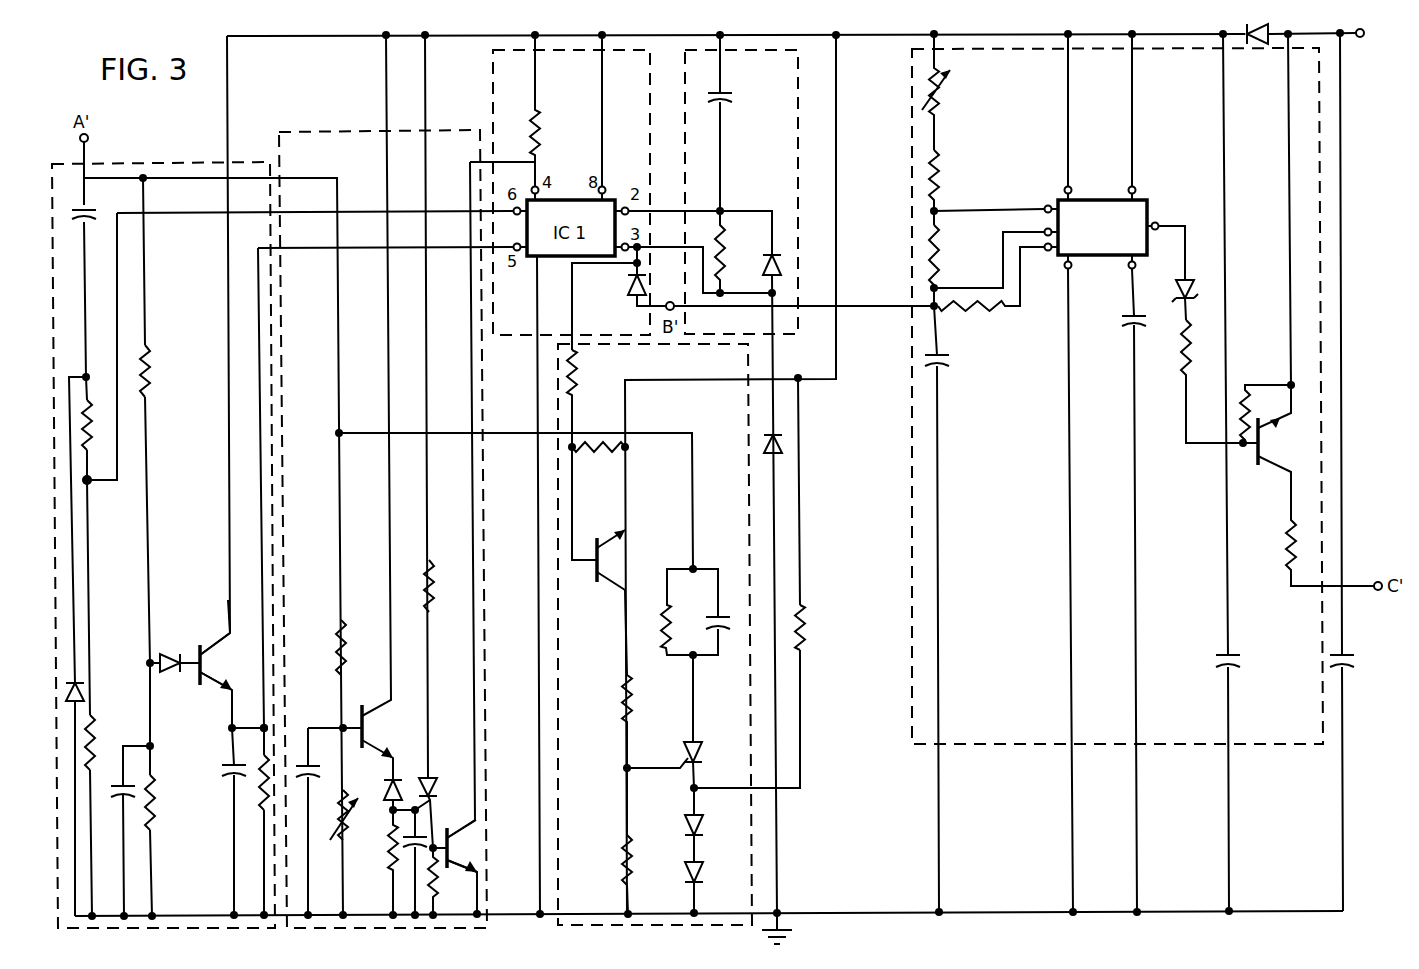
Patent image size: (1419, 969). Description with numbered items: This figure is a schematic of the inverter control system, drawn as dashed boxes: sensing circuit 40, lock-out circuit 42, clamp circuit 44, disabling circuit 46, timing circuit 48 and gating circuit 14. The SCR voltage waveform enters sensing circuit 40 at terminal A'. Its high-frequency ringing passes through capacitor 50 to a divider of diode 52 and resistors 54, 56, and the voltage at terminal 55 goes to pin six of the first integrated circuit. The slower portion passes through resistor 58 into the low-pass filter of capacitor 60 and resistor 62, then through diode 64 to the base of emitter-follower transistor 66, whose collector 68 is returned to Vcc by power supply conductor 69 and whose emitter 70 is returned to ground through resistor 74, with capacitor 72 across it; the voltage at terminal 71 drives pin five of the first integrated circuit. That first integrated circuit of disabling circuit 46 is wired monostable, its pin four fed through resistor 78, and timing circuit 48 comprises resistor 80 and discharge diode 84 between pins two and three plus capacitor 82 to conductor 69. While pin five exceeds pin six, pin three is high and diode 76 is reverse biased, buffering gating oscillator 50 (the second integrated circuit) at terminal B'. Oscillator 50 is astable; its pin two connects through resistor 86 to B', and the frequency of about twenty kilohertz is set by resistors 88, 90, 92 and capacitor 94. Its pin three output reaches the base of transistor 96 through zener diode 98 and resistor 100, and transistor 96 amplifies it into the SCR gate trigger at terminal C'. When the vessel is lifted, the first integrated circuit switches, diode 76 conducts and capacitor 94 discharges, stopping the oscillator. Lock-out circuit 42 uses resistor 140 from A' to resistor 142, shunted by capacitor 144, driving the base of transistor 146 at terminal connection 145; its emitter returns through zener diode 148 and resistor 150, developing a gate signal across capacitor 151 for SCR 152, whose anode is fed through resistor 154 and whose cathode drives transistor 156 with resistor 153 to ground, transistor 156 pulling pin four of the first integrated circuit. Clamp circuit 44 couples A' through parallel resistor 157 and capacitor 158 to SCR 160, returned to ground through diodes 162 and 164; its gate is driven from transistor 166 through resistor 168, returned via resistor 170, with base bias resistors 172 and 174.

The gating circuit 14 is at (922, 96).
The sensing circuit 40 is at (125, 164).
The lock-out circuit 42 is at (302, 132).
The clamp circuit 44 is at (752, 853).
The disabling circuit 46 is at (493, 67).
The timing circuit 48 is at (795, 152).
The capacitor / gating oscillator 50 is at (89, 218).
The diode 52 is at (76, 686).
The resistor 54 is at (95, 420).
The terminal 55 is at (90, 487).
The resistor 56 is at (94, 720).
The resistor 58 is at (151, 373).
The capacitor 60 is at (138, 782).
The resistor 62 is at (155, 795).
The diode 64 is at (162, 671).
The transistor 66 is at (208, 666).
The collector 68 is at (224, 638).
The power supply conductor 69 is at (886, 38).
The emitter 70 is at (225, 697).
The terminal 71 is at (263, 728).
The capacitor 72 is at (229, 767).
The resistor 74 is at (261, 790).
The diode 76 is at (626, 288).
The resistor 78 is at (541, 130).
The resistor 80 is at (727, 226).
The capacitor 82 is at (732, 100).
The discharge diode 84 is at (765, 256).
The resistor 86 is at (990, 312).
The resistor 88 is at (946, 108).
The resistor 90 is at (946, 185).
The resistor 92 is at (946, 268).
The capacitor 94 is at (952, 364).
The transistor 96 is at (1267, 445).
The zener diode 98 is at (1202, 285).
The resistor 100 is at (1193, 356).
The resistor 140 is at (338, 652).
The resistor 142 is at (349, 808).
The capacitor 144 is at (319, 768).
The terminal connection 145 is at (326, 728).
The transistor 146 is at (371, 729).
The zener diode 148 is at (402, 770).
The resistor 150 is at (388, 855).
The capacitor 151 is at (420, 828).
The SCR 152 is at (432, 778).
The resistor 153 is at (445, 874).
The resistor 154 is at (434, 588).
The transistor 156 is at (457, 846).
The resistor 157 is at (666, 646).
The capacitor 158 is at (714, 616).
The SCR 160 is at (703, 738).
The diode 162 is at (715, 826).
The diode 164 is at (715, 873).
The transistor 166 is at (602, 562).
The resistor 168 is at (622, 712).
The resistor 170 is at (623, 862).
The resistor 172 is at (615, 454).
The resistor 174 is at (580, 372).